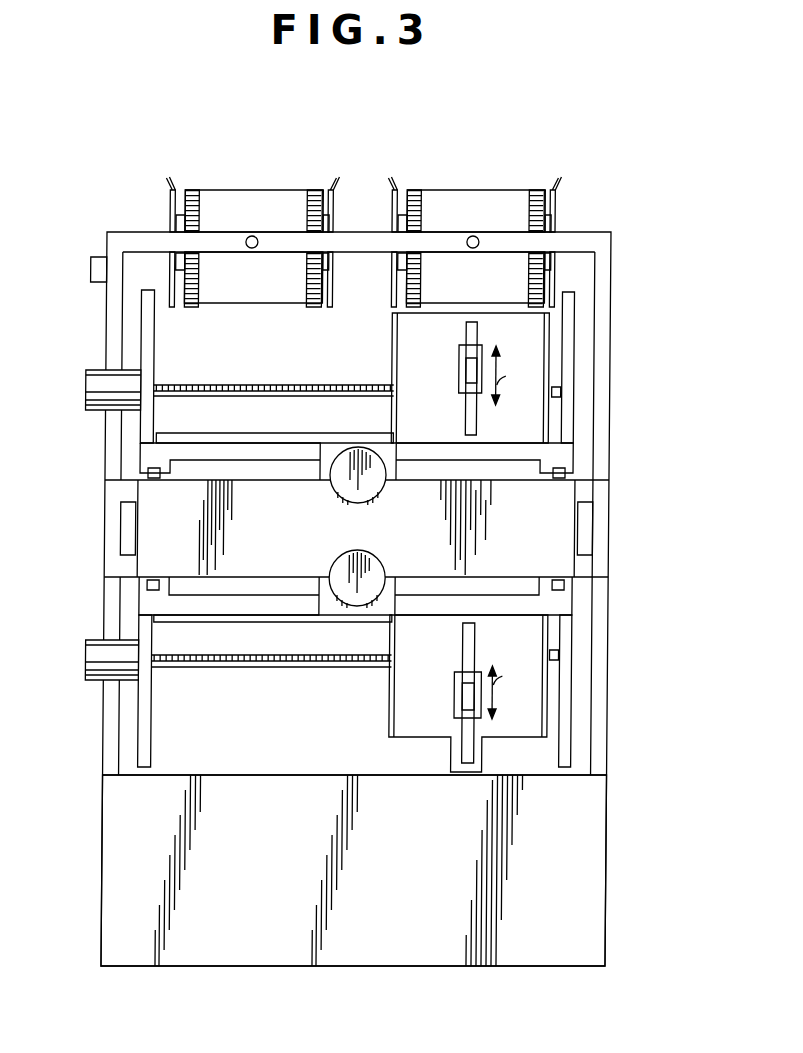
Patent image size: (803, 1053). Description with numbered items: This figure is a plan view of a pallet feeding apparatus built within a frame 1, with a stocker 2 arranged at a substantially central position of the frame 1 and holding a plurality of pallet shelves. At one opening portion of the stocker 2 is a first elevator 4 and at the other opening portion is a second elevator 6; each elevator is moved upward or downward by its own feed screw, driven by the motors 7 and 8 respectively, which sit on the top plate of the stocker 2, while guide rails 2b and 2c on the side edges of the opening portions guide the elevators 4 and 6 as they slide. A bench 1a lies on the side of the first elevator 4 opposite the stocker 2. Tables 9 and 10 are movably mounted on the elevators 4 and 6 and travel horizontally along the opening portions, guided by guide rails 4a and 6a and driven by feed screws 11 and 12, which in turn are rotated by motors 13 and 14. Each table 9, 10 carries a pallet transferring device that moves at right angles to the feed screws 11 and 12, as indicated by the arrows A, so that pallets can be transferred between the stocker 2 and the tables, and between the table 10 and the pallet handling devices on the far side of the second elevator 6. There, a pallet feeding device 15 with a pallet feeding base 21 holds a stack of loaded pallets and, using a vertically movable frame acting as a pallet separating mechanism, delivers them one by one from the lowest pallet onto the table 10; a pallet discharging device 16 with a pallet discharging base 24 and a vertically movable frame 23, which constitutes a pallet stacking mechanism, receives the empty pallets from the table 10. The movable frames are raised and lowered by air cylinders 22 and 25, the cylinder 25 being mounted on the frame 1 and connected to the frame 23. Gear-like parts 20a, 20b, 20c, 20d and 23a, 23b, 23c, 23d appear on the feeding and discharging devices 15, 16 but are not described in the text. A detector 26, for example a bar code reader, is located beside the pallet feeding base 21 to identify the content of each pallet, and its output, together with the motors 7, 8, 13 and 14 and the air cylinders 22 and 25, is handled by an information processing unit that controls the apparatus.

The frame 1 is at (611, 258).
The bench 1a is at (120, 855).
The stocker 2 is at (598, 528).
The guide rail 2b is at (155, 580).
The guide rail 2c is at (157, 479).
The first elevator 4 is at (150, 600).
The guide rail 4a is at (270, 621).
The second elevator 6 is at (150, 461).
The guide rail 6a is at (275, 436).
The motor 7 is at (372, 572).
The motor 8 is at (348, 492).
The table 9 is at (430, 720).
The table 10 is at (405, 355).
The feed screw 11 is at (272, 670).
The feed screw 12 is at (241, 383).
The motor 13 is at (100, 656).
The motor 14 is at (98, 376).
The pallet feeding device 15 is at (248, 210).
The pallet discharging device 16 is at (497, 206).
The right gear of supply reel 20a is at (326, 222).
The right gear of take-up reel 20b is at (325, 278).
The left gear of supply reel 20c is at (183, 222).
The left gear of take-up reel 20d is at (190, 277).
The pallet feeding base 21 is at (215, 200).
The air cylinder 22 is at (252, 236).
The vertically movable frame 23 is at (275, 279).
The right gear of right supply reel 23a is at (547, 222).
The right gear of right take-up reel 23b is at (528, 278).
The left gear of right supply reel 23c is at (412, 222).
The left gear of right take-up reel 23d is at (414, 276).
The pallet discharging base 24 is at (463, 200).
The air cylinder 25 is at (479, 237).
The detector 26 is at (97, 257).